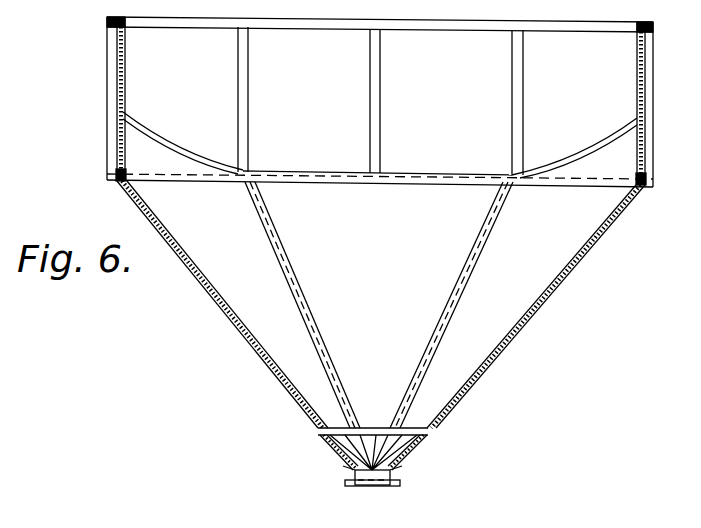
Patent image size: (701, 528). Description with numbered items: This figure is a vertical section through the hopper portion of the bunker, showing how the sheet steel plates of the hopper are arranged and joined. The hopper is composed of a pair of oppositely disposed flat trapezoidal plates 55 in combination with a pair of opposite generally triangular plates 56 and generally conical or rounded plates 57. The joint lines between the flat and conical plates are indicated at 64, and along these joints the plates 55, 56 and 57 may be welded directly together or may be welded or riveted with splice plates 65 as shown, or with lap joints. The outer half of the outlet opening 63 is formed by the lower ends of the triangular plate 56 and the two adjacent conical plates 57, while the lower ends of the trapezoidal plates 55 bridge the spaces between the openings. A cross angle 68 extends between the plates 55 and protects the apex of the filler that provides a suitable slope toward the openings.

The flat trapezoidal plate 55 is at (251, 346).
The generally triangular plate 56 is at (379, 305).
The generally conical plate 57 is at (381, 304).
The outlet opening 63 is at (372, 478).
The joint line 64 is at (277, 236).
The splice plate 65 is at (295, 300).
The cross angle 68 is at (362, 427).